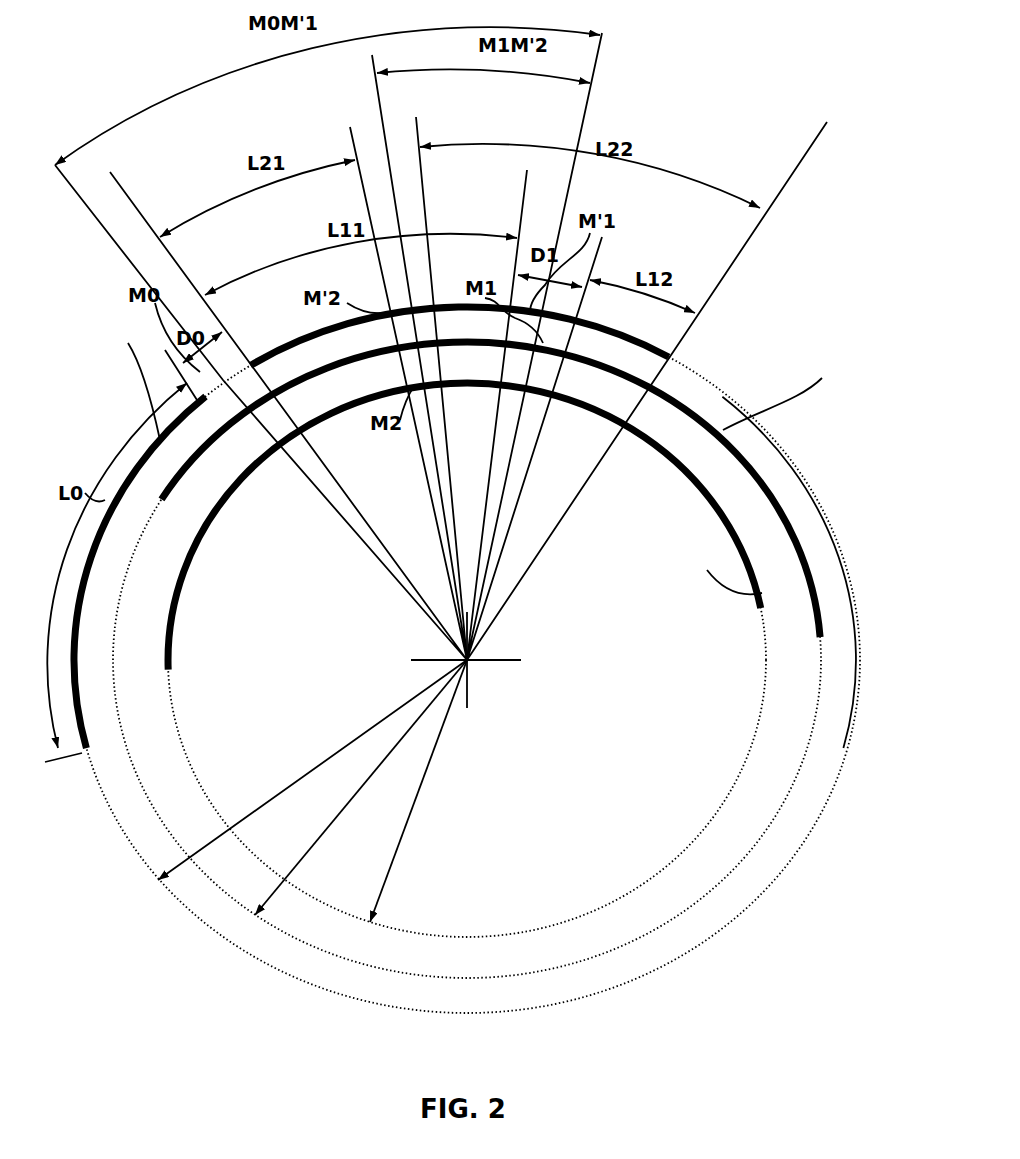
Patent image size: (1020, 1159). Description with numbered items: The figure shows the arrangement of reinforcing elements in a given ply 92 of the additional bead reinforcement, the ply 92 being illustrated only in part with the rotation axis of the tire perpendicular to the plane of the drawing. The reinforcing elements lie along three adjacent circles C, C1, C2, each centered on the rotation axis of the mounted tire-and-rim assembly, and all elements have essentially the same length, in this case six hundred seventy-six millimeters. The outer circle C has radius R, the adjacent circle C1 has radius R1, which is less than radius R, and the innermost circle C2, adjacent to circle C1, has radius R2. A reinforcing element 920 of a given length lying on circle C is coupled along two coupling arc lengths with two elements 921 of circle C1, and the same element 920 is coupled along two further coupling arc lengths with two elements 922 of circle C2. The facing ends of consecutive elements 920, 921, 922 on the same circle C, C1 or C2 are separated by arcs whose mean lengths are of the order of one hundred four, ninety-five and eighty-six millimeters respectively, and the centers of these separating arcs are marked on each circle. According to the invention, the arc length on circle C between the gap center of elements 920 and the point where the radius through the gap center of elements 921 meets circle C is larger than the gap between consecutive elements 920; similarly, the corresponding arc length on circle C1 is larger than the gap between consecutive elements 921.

The ply 92 is at (133, 668).
The reinforcing element 920 is at (88, 500).
The reinforcing elements of circle C1 921 is at (197, 528).
The reinforcing elements of circle C2 922 is at (263, 460).
The circle C is at (134, 383).
The circle C1 is at (783, 392).
The circle C2 is at (717, 566).
The radius R is at (312, 770).
The radius R1 is at (361, 787).
The radius R2 is at (418, 791).